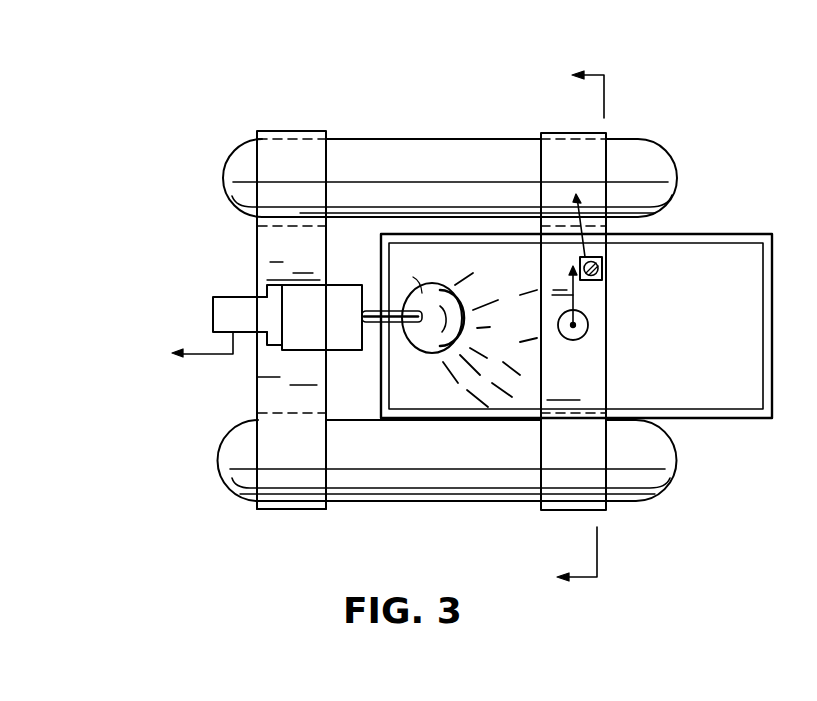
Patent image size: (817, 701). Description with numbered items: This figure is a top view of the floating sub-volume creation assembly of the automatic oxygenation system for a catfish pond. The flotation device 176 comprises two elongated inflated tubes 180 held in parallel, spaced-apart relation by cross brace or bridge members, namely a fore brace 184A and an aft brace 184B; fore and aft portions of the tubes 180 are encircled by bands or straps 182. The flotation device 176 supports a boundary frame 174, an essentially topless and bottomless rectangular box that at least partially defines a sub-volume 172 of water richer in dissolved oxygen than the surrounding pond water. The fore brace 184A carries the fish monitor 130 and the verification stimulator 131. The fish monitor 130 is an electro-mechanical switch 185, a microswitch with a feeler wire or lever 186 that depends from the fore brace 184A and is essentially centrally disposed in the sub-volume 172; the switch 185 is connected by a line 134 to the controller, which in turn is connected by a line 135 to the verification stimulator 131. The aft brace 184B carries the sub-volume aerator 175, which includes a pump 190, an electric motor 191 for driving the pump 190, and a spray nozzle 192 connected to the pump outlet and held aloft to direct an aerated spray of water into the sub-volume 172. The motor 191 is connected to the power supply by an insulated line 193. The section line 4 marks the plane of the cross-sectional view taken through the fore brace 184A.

The section line 4- 4 is at (567, 323).
The fish monitor 130 is at (626, 327).
The verification stimulator 131 is at (619, 269).
The line 134 is at (571, 281).
The line 135 is at (576, 196).
The sub-volume 172 is at (665, 386).
The boundary frame 174 is at (747, 234).
The sub-volume aerator 175 is at (368, 268).
The flotation device 176 is at (678, 133).
The elongated inflated tubes 180 is at (385, 138).
The straps 182 is at (287, 502).
The fore brace 184A is at (606, 301).
The aft brace 184B is at (287, 255).
The electro-mechanical switch 185 is at (558, 322).
The feeler wire 186 is at (573, 340).
The pump 190 is at (313, 352).
The electric motor 191 is at (213, 318).
The spray nozzle 192 is at (468, 328).
The insulated line 193 is at (195, 358).